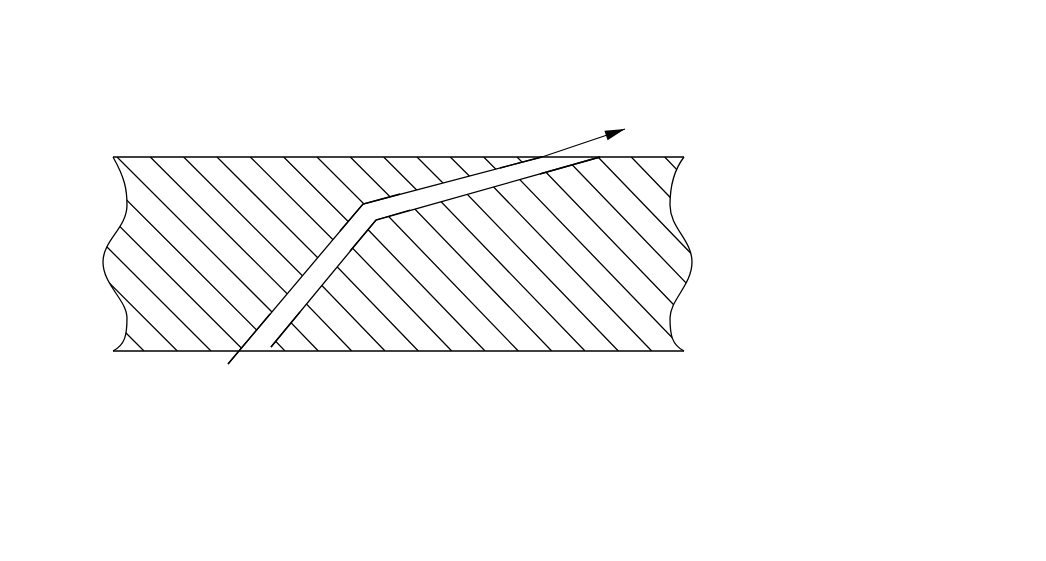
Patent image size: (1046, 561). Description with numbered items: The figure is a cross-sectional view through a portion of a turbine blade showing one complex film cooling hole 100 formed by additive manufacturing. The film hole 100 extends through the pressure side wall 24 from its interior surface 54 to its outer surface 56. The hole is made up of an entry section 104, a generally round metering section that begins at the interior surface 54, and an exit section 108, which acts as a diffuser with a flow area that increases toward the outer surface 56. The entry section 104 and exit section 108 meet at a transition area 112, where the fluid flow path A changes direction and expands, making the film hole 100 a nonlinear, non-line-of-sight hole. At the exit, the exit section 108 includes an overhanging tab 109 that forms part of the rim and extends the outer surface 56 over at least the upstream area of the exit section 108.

The film cooling hole 100 is at (621, 41).
The pressure side wall 24 is at (106, 268).
The outer surface 56 is at (175, 157).
The interior surface 54 is at (507, 352).
The exit section 108 is at (398, 205).
The entry section 104 is at (283, 320).
The transition area 112 is at (380, 237).
The overhanging tab 109 is at (440, 168).